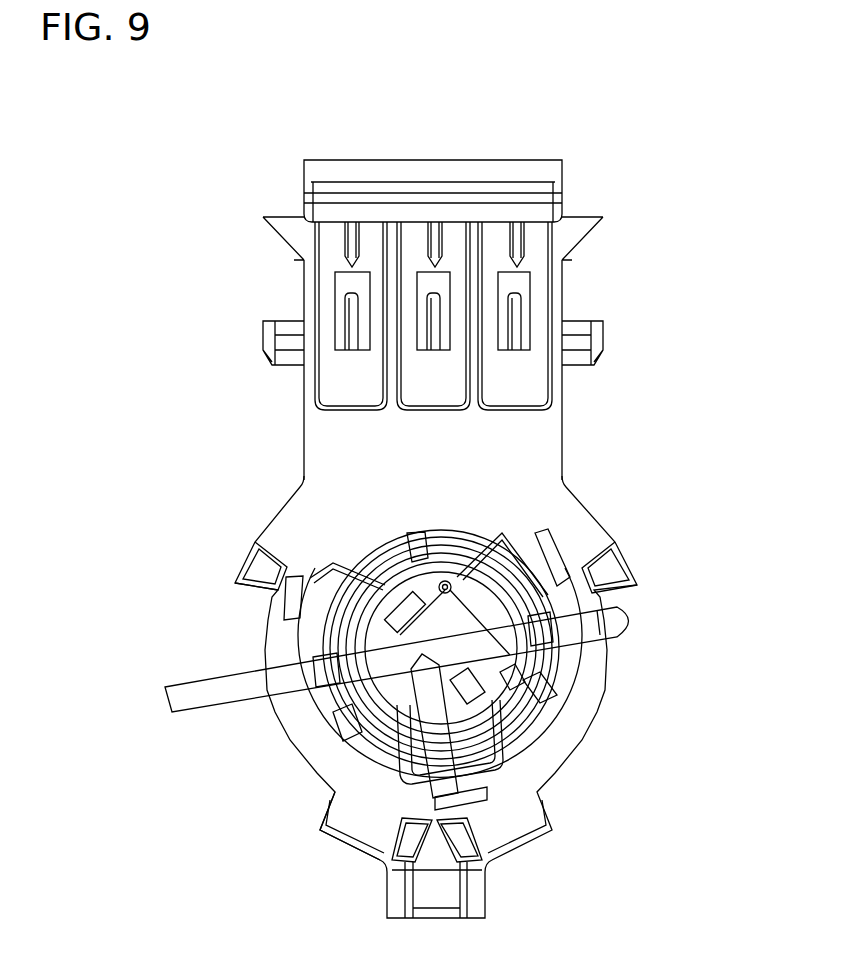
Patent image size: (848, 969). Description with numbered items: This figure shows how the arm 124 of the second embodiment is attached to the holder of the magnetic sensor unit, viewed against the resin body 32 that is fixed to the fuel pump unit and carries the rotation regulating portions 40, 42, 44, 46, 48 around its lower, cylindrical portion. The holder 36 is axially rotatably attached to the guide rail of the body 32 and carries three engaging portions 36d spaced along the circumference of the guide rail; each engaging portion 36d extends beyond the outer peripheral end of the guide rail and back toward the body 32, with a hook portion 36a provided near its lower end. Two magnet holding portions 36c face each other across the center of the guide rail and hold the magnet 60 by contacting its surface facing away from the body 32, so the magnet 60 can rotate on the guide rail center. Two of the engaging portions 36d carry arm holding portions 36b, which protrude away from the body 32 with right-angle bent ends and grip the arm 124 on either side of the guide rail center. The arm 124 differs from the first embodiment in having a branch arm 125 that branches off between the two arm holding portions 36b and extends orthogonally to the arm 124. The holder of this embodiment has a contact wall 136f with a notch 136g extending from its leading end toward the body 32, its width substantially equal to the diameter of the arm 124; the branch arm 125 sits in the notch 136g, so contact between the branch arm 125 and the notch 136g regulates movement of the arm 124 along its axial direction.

The body 32 is at (543, 434).
The holder 36 is at (347, 302).
The hook portion 36a is at (293, 617).
The arm holding portion 36b is at (327, 655).
The magnet holding portion 36c is at (378, 573).
The engaging portion 36d is at (335, 560).
The rotation regulating portion 40 is at (613, 568).
The rotation regulating portion 42 is at (462, 840).
The rotation regulating portion 44 is at (390, 837).
The rotation regulating portion 46 is at (255, 567).
The rotation regulating portion 48 is at (323, 815).
The magnet 60 is at (522, 660).
The arm 124 is at (220, 700).
The branch arm 125 is at (403, 772).
The contact wall 136f is at (425, 735).
The notch 136g is at (437, 767).